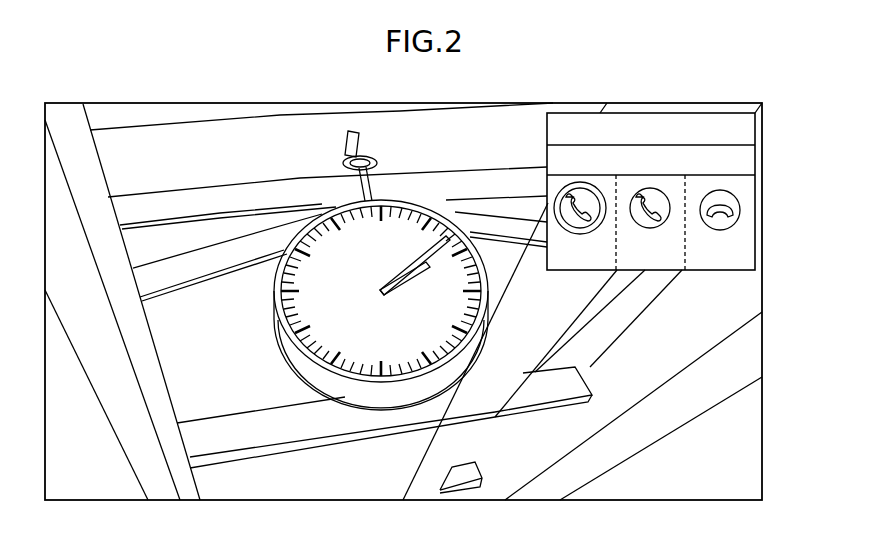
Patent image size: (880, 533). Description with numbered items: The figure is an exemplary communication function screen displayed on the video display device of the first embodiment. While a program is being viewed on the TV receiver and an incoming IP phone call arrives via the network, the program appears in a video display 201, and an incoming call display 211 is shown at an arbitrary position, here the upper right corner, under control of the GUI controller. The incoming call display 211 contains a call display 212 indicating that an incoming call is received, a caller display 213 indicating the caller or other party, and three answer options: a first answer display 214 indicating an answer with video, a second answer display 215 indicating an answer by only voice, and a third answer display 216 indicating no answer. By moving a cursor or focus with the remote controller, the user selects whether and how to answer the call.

The video display 201 is at (762, 432).
The incoming call display 211 is at (667, 199).
The call display 212 is at (667, 118).
The caller display 213 is at (722, 155).
The answer display 1 214 is at (552, 241).
The answer display 2 215 is at (647, 265).
The answer display 3 216 is at (716, 263).